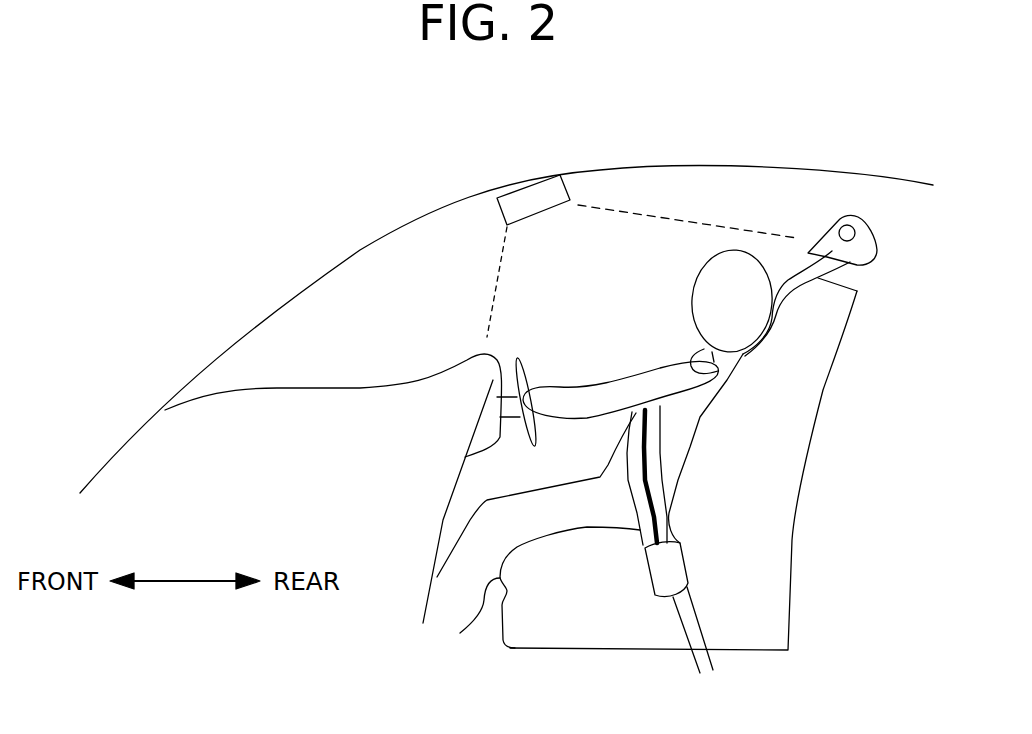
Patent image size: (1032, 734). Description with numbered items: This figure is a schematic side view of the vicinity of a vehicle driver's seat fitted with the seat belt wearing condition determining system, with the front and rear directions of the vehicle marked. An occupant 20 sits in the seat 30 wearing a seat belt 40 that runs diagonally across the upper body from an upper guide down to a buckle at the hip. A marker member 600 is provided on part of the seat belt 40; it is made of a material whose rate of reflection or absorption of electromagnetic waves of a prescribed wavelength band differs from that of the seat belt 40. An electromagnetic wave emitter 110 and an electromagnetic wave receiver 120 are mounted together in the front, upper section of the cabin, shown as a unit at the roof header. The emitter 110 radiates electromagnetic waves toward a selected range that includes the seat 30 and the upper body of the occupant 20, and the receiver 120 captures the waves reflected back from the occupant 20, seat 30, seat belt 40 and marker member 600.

The electromagnetic wave emitter 110 is at (576, 229).
The electromagnetic wave receiver 120 is at (527, 188).
The occupant 20 is at (653, 372).
The seat 30 is at (820, 367).
The seat belt 40 is at (663, 497).
The marker member 600 is at (647, 470).